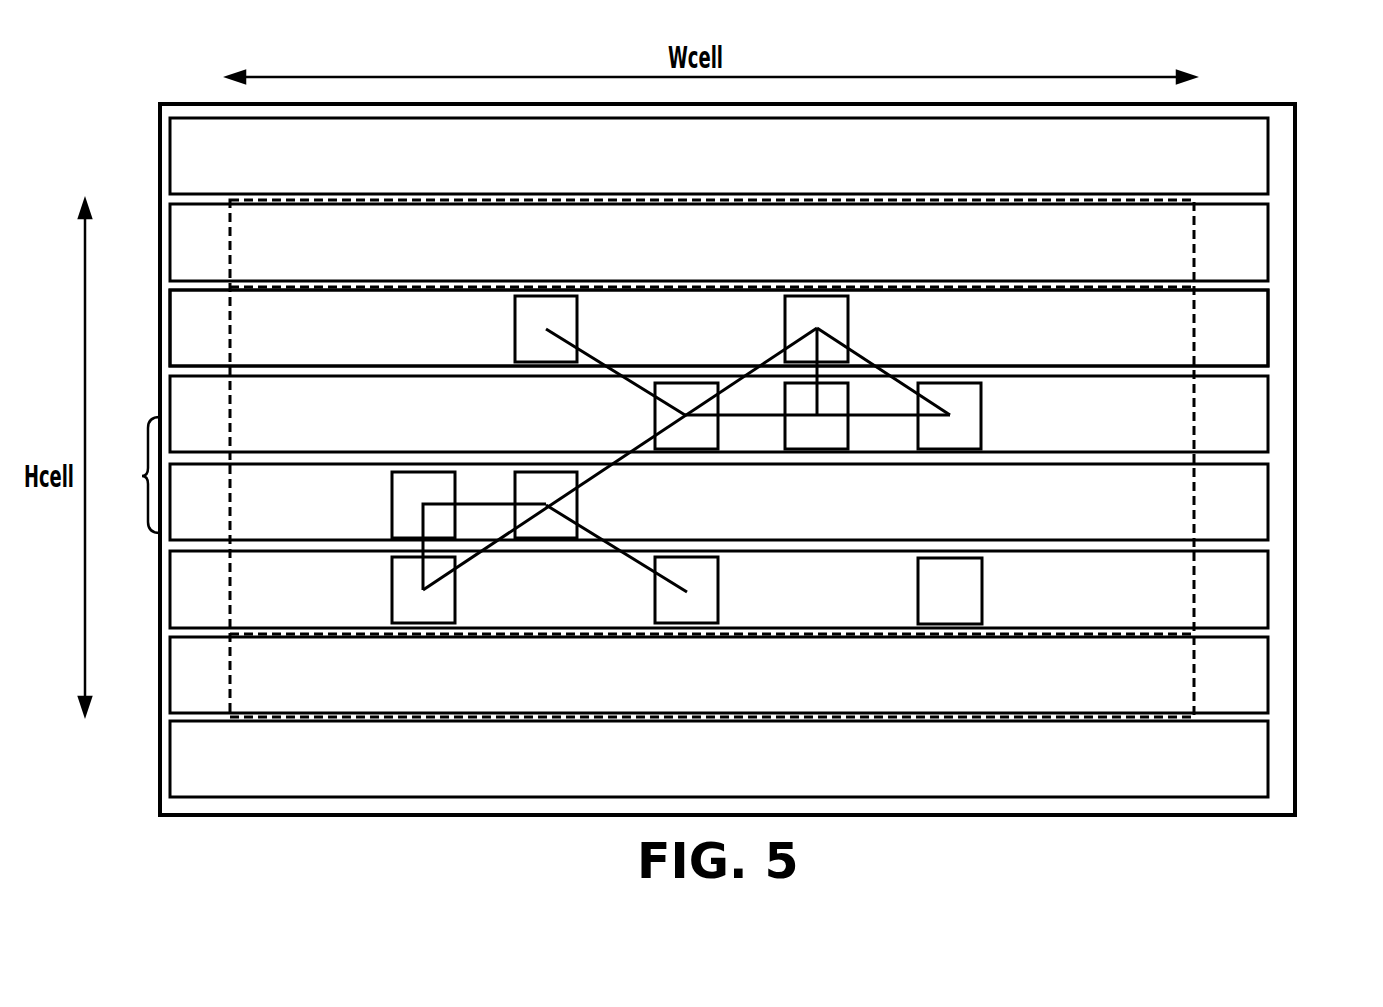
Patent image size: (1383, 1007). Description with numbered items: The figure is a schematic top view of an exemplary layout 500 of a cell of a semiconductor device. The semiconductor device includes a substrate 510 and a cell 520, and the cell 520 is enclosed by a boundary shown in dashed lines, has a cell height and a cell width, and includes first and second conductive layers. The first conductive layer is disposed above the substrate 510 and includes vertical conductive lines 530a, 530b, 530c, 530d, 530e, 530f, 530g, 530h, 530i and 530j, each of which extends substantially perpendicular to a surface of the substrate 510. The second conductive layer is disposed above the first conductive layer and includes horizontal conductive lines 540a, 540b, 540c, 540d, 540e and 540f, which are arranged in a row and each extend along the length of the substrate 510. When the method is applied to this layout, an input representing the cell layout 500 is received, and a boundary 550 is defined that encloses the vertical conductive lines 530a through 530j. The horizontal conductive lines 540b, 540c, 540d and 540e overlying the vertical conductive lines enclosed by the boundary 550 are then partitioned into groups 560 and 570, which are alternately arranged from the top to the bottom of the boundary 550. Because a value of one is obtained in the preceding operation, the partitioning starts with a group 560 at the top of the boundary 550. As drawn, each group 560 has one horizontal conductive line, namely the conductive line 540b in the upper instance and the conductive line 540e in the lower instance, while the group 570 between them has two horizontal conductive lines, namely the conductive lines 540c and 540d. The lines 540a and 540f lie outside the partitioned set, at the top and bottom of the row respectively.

The layout 500 is at (197, 47).
The substrate 510 is at (1295, 150).
The cell 520 is at (808, 200).
The vertical conductive line 530a is at (515, 328).
The vertical conductive line 530b is at (817, 294).
The vertical conductive line 530c is at (686, 383).
The vertical conductive line 530d is at (818, 452).
The vertical conductive line 530e is at (983, 417).
The vertical conductive line 530f is at (392, 503).
The vertical conductive line 530g is at (546, 471).
The vertical conductive line 530h is at (392, 590).
The vertical conductive line 530i is at (719, 592).
The vertical conductive line 530j is at (983, 593).
The horizontal conductive line 540a is at (1268, 243).
The horizontal conductive line 540b is at (1268, 328).
The horizontal conductive line 540c is at (1268, 415).
The horizontal conductive line 540d is at (1268, 503).
The horizontal conductive line 540e is at (1268, 590).
The horizontal conductive line 540f is at (1268, 672).
The boundary 550 is at (590, 287).
The group 560 is at (160, 327).
The group 570 is at (142, 476).